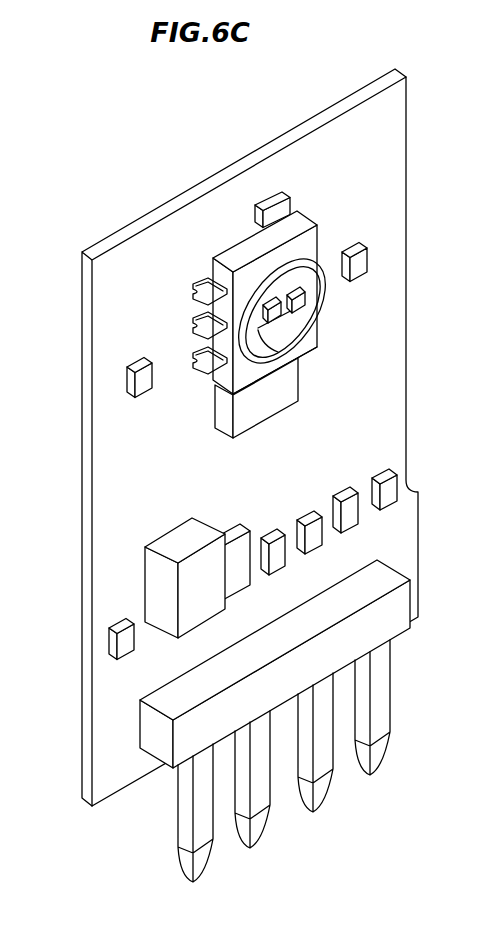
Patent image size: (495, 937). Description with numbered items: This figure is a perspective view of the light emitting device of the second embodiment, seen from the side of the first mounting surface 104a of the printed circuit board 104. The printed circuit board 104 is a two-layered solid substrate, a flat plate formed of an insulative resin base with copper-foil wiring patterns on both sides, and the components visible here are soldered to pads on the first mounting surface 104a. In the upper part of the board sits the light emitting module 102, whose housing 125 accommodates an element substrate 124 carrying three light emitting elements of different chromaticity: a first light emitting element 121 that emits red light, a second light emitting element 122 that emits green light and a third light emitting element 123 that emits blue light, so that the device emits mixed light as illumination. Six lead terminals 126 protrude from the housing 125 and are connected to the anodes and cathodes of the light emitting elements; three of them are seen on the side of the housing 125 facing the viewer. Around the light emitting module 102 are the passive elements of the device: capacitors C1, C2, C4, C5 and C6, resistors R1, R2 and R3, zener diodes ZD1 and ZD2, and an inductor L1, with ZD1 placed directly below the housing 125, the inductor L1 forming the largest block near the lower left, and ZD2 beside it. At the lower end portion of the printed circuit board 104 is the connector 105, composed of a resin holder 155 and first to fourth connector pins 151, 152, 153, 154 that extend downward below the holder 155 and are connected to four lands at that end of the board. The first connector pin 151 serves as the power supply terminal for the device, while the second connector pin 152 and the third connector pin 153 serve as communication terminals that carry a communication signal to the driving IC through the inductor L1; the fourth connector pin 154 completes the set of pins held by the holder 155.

The printed circuit board 104 is at (300, 130).
The first mounting surface 104a is at (382, 173).
The light emitting module 102 is at (249, 292).
The first light emitting element 121 is at (313, 305).
The second light emitting element 122 is at (283, 312).
The third light emitting element 123 is at (298, 340).
The element substrate 124 is at (267, 338).
The housing 125 is at (247, 367).
The lead terminals 126 is at (193, 357).
The connector 105 is at (310, 702).
The holder 155 is at (395, 623).
The first connector pin 151 is at (203, 860).
The second connector pin 152 is at (257, 830).
The third connector pin 153 is at (320, 797).
The fourth connector pin 154 is at (383, 762).
The capacitor C1 is at (130, 650).
The capacitor C2 is at (277, 558).
The capacitor C4 is at (143, 387).
The capacitor C5 is at (290, 205).
The capacitor C6 is at (362, 263).
The resistor R1 is at (313, 542).
The resistor R2 is at (348, 520).
The resistor R3 is at (387, 502).
The inductor L1 is at (172, 542).
The zener diode ZD1 is at (247, 415).
The zener diode ZD2 is at (237, 572).